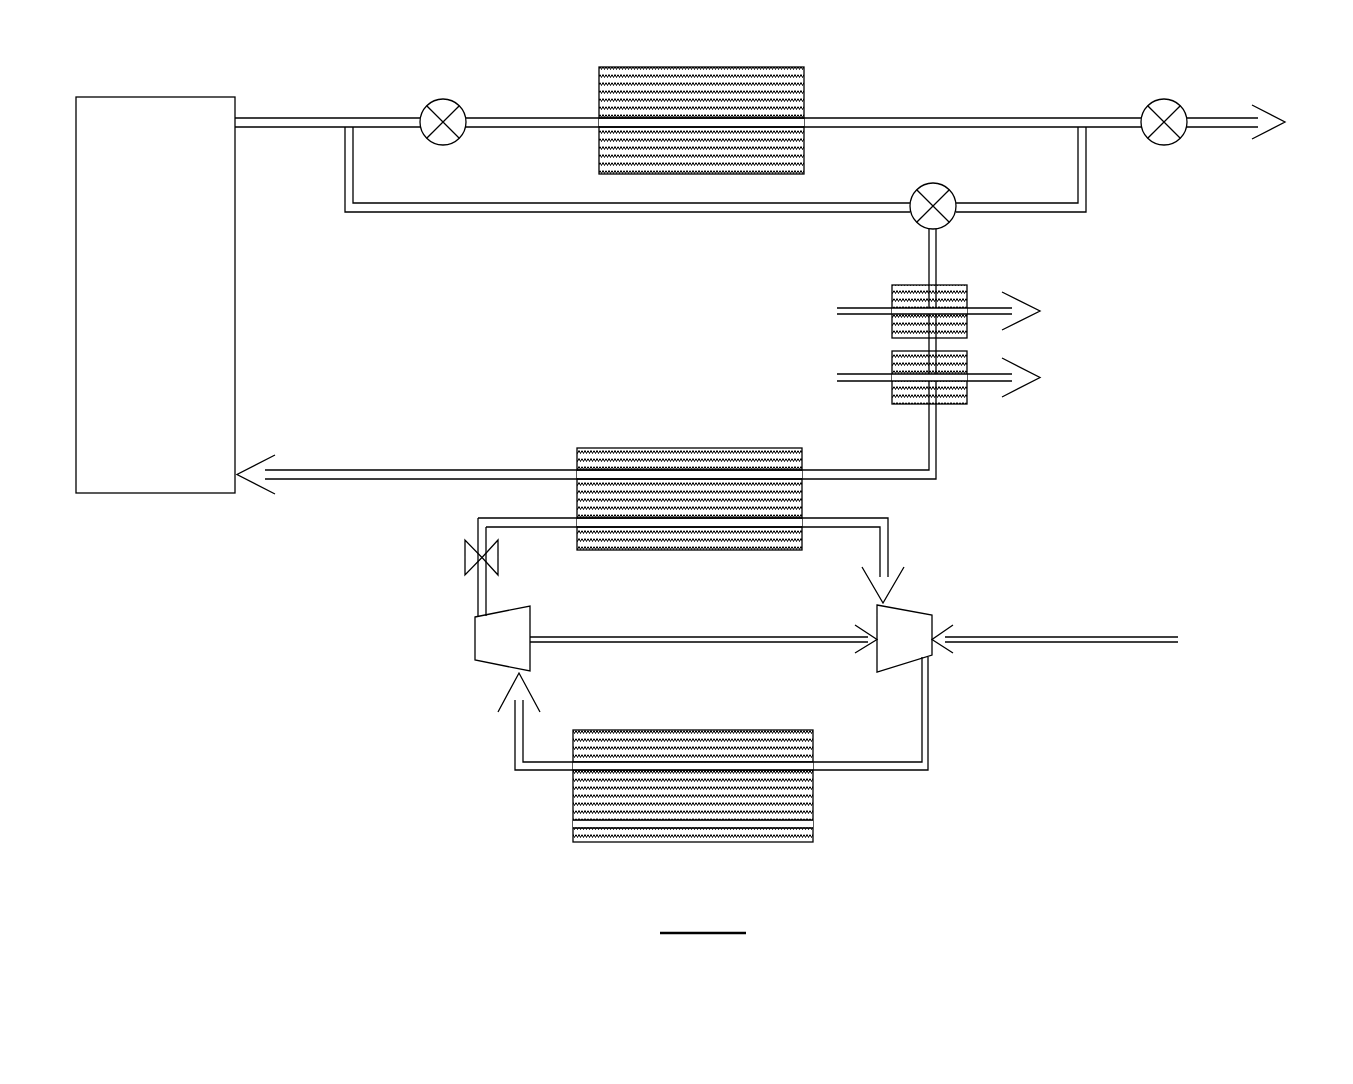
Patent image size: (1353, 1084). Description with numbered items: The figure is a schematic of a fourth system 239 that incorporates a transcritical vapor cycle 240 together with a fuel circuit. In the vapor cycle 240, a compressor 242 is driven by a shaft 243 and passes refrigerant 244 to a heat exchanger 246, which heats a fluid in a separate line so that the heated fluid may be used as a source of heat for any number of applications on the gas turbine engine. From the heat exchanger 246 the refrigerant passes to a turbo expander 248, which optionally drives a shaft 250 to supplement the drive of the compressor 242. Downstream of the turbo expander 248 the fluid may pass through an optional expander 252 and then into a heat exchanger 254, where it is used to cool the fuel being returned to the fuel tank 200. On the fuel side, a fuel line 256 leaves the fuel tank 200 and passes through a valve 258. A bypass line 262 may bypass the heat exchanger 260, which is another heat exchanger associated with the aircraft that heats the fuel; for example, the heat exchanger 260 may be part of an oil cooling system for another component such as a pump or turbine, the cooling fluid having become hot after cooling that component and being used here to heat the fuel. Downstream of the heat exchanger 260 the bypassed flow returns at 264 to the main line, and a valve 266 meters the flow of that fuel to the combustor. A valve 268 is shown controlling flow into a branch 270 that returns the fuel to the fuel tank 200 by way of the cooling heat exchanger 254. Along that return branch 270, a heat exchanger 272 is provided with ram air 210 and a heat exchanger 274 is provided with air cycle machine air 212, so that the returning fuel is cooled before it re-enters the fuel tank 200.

The fuel tank 200 is at (143, 118).
The fuel line 256 is at (330, 127).
The valve 258 is at (447, 110).
The heat exchanger 260 is at (800, 97).
The bypass line 262 is at (388, 212).
The return to main line 264 is at (1080, 118).
The valve 266 is at (1170, 108).
The valve 268 is at (938, 193).
The branch 270 is at (937, 247).
The heat exchanger 272 is at (913, 288).
The heat exchanger 274 is at (888, 394).
The ram air 210 is at (835, 312).
The air cycle machine air 212 is at (835, 377).
The heat exchanger 254 is at (690, 465).
The expander 252 is at (465, 562).
The turbo expander 248 is at (525, 625).
The shaft 250 is at (765, 637).
The compressor 242 is at (870, 655).
The shaft 243 is at (1075, 642).
The refrigerant 244 is at (920, 707).
The heat exchanger 246 is at (923, 677).
The system 239 is at (1168, 469).
The transcritical vapor cycle 240 is at (953, 563).